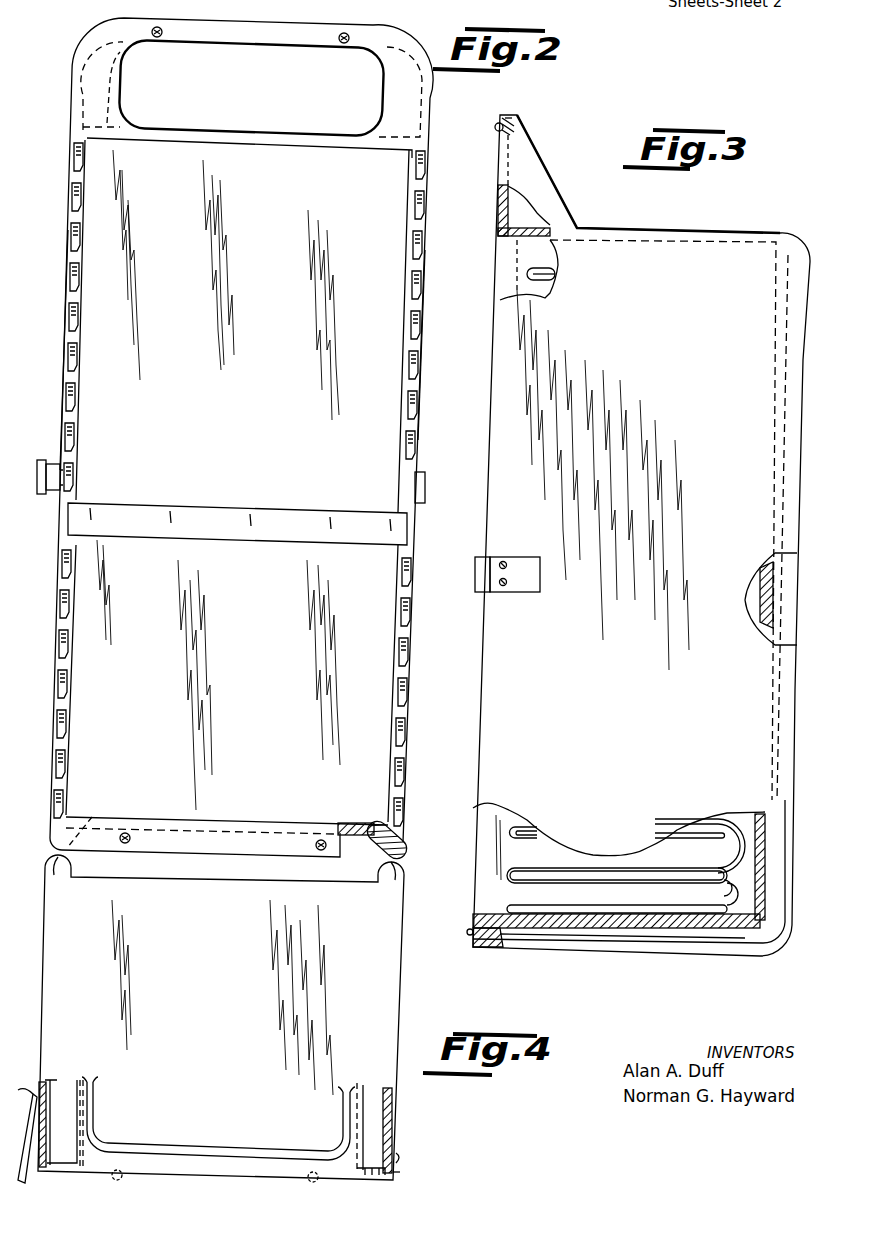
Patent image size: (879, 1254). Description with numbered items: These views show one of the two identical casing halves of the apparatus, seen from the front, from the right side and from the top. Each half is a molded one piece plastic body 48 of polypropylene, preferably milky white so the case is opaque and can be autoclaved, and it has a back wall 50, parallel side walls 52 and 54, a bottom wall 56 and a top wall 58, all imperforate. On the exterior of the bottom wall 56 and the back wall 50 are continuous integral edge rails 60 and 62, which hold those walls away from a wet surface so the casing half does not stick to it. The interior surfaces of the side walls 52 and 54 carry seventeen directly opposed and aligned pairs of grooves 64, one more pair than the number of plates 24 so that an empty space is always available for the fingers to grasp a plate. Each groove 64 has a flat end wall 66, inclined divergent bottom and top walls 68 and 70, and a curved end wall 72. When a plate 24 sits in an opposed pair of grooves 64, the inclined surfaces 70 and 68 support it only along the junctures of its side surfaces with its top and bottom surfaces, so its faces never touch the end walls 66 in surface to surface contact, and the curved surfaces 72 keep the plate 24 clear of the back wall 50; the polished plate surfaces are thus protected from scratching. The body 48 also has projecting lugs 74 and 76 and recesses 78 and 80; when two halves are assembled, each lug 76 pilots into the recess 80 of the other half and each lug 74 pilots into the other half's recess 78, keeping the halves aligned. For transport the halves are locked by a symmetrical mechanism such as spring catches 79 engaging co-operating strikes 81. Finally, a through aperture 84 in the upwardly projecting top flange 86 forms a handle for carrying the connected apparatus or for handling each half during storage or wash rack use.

In FIG. 2, the plate 24 is at (268, 528).
In FIG. 2, the molded one piece plastic body 48 is at (433, 131).
In FIG. 2, the back wall 50 is at (256, 392).
In FIG. 3, the back wall 50 is at (752, 815).
In FIG. 4, the back wall 50 is at (253, 872).
In FIG. 2, the side wall 52 is at (68, 365).
In FIG. 3, the side wall 52 is at (493, 853).
In FIG. 4, the side wall 52 is at (42, 990).
In FIG. 2, the side wall 54 is at (417, 400).
In FIG. 3, the side wall 54 is at (510, 695).
In FIG. 4, the side wall 54 is at (401, 1015).
In FIG. 2, the bottom wall 56 is at (239, 820).
In FIG. 3, the bottom wall 56 is at (609, 925).
In FIG. 2, the top wall 58 is at (278, 143).
In FIG. 3, the top wall 58 is at (500, 243).
In FIG. 4, the top wall 58 is at (244, 984).
In FIG. 2, the edge rail 60 is at (91, 815).
In FIG. 3, the edge rail 60 is at (690, 946).
In FIG. 4, the edge rail 60 is at (62, 875).
In FIG. 2, the edge rail 62 is at (372, 824).
In FIG. 3, the edge rail 62 is at (790, 708).
In FIG. 4, the edge rail 62 is at (390, 875).
In FIG. 2, the grooves 64 is at (72, 762).
In FIG. 2, the flat end wall 66 is at (75, 712).
In FIG. 3, the flat end wall 66 is at (584, 857).
In FIG. 2, the inclined bottom wall 68 is at (75, 728).
In FIG. 3, the inclined bottom wall 68 is at (527, 832).
In FIG. 2, the inclined top wall 70 is at (75, 703).
In FIG. 3, the inclined top wall 70 is at (520, 838).
In FIG. 3, the curved end wall 72 is at (735, 855).
In FIG. 2, the projecting lug 74 is at (320, 840).
In FIG. 3, the projecting lug 74 is at (467, 933).
In FIG. 4, the projecting lug 74 is at (419, 1046).
In FIG. 2, the projecting lug 76 is at (157, 38).
In FIG. 3, the projecting lug 76 is at (496, 130).
In FIG. 4, the projecting lug 76 is at (117, 1175).
In FIG. 2, the recess 78 is at (128, 833).
In FIG. 2, the spring catch 79 is at (435, 552).
In FIG. 3, the spring catch 79 is at (483, 555).
In FIG. 4, the spring catch 79 is at (201, 1133).
In FIG. 2, the recess 80 is at (344, 44).
In FIG. 3, the recess 80 is at (518, 120).
In FIG. 4, the recess 80 is at (313, 1177).
In FIG. 3, the strike 81 is at (475, 570).
In FIG. 4, the strike 81 is at (398, 1173).
In FIG. 2, the through aperture 84 is at (188, 128).
In FIG. 2, the top flange 86 is at (92, 50).